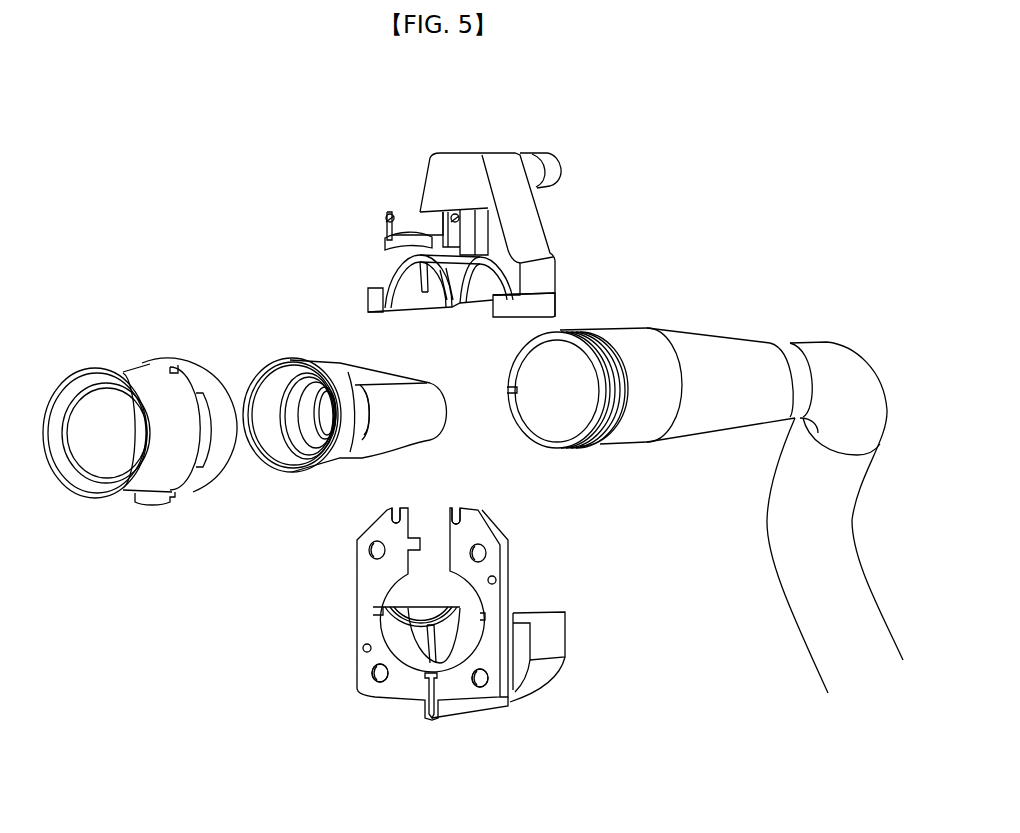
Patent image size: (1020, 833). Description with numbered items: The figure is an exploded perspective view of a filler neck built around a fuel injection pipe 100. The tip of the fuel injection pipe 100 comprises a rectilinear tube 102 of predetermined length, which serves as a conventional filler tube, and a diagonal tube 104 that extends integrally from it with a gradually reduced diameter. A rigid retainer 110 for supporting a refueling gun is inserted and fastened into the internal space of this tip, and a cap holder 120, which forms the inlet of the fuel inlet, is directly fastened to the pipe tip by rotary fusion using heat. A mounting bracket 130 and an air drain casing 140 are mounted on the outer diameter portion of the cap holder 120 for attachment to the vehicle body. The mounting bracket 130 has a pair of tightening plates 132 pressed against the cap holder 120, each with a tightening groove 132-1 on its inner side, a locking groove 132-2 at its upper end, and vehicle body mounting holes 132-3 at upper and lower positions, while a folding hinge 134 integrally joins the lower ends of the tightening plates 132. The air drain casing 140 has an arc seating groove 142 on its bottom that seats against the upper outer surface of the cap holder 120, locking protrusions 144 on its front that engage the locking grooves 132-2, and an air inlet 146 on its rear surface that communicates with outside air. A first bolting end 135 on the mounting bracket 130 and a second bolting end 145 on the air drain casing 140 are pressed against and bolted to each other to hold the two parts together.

The fuel injection pipe 100 is at (770, 344).
The rectilinear tube 102 is at (578, 330).
The diagonal tube 104 is at (706, 347).
The retainer 110 is at (342, 358).
The cap holder 120 is at (118, 373).
The mounting bracket 130 is at (353, 548).
The tightening plates 132 is at (368, 588).
The tightening groove 132-1 is at (467, 577).
The locking groove 132-2 is at (396, 512).
The vehicle body mounting holes 132-3 is at (372, 675).
The folding hinge 134 is at (420, 707).
The first bolting end 135 is at (553, 617).
The air drain casing 140 is at (550, 212).
The arc seating groove 142 is at (400, 275).
The locking protrusions 144 is at (455, 215).
The second bolting end 145 is at (542, 307).
The air inlet 146 is at (562, 163).